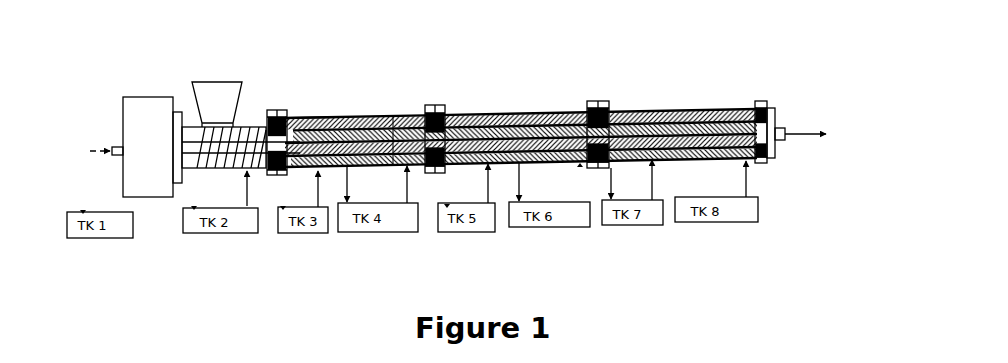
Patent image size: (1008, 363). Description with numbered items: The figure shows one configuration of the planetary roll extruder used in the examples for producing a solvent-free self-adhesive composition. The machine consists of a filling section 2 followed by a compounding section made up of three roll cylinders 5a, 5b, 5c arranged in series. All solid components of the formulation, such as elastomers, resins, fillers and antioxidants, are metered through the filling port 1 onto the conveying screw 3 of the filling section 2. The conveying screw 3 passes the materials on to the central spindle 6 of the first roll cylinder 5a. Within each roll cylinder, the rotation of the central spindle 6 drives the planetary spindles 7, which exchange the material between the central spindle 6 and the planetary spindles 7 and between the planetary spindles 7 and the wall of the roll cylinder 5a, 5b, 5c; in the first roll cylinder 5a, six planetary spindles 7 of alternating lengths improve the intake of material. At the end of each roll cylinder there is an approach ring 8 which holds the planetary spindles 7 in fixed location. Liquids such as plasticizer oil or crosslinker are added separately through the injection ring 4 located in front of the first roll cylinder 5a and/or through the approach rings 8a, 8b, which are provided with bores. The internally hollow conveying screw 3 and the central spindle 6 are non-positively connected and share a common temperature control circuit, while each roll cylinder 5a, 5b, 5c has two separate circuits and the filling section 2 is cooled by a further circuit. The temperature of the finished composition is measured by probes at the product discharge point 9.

The filling port 1 is at (210, 107).
The filling section 2 is at (136, 133).
The conveying screw 3 is at (244, 148).
The injection ring 4 is at (277, 111).
The first roll cylinder 5a is at (355, 130).
The second roll cylinder 5b is at (506, 127).
The third roll cylinder 5c is at (672, 124).
The central spindle 6 is at (310, 116).
The planetary spindles 7 is at (408, 116).
The approach ring 8a is at (437, 104).
The approach ring 8b is at (598, 107).
The approach ring 8 is at (752, 101).
The product discharge point 9 is at (800, 146).